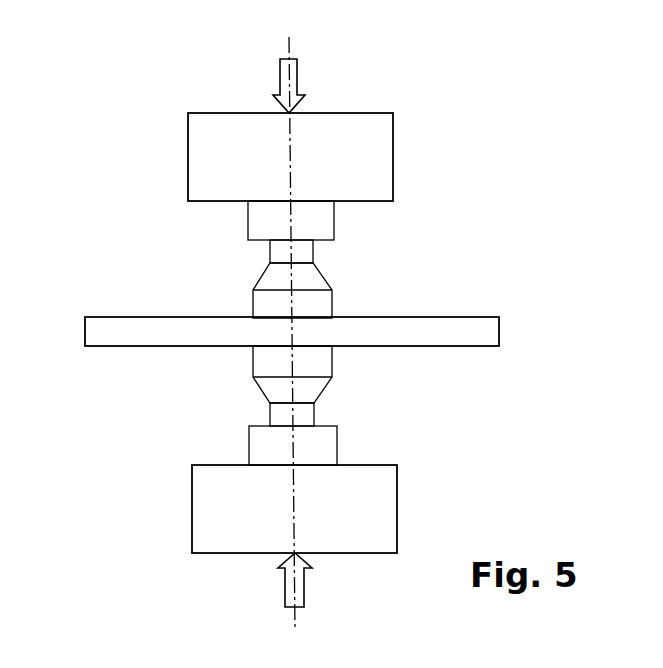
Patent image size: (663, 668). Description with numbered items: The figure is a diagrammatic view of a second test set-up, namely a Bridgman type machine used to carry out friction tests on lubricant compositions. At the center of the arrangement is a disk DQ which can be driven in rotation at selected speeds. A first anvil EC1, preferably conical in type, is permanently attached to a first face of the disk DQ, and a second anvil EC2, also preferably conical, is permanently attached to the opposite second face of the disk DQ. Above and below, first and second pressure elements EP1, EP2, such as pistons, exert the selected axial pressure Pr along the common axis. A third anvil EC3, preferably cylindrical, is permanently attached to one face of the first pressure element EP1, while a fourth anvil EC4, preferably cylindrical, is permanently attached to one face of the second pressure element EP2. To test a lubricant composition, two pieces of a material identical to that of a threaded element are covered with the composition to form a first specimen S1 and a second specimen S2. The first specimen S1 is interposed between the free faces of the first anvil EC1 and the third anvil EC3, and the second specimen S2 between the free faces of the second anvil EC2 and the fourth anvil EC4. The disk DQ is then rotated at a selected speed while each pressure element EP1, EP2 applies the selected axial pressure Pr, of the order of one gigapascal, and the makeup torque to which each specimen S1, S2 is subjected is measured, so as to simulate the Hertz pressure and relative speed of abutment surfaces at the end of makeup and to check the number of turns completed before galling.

The axial pressure Pr is at (292, 83).
The first pressure element EP1 is at (188, 170).
The second pressure element EP2 is at (192, 528).
The third anvil EC3 is at (248, 220).
The fourth anvil EC4 is at (249, 450).
The first anvil EC1 is at (253, 305).
The second anvil EC2 is at (258, 384).
The first specimen S1 is at (313, 252).
The second specimen S2 is at (314, 417).
The disk DQ is at (85, 340).